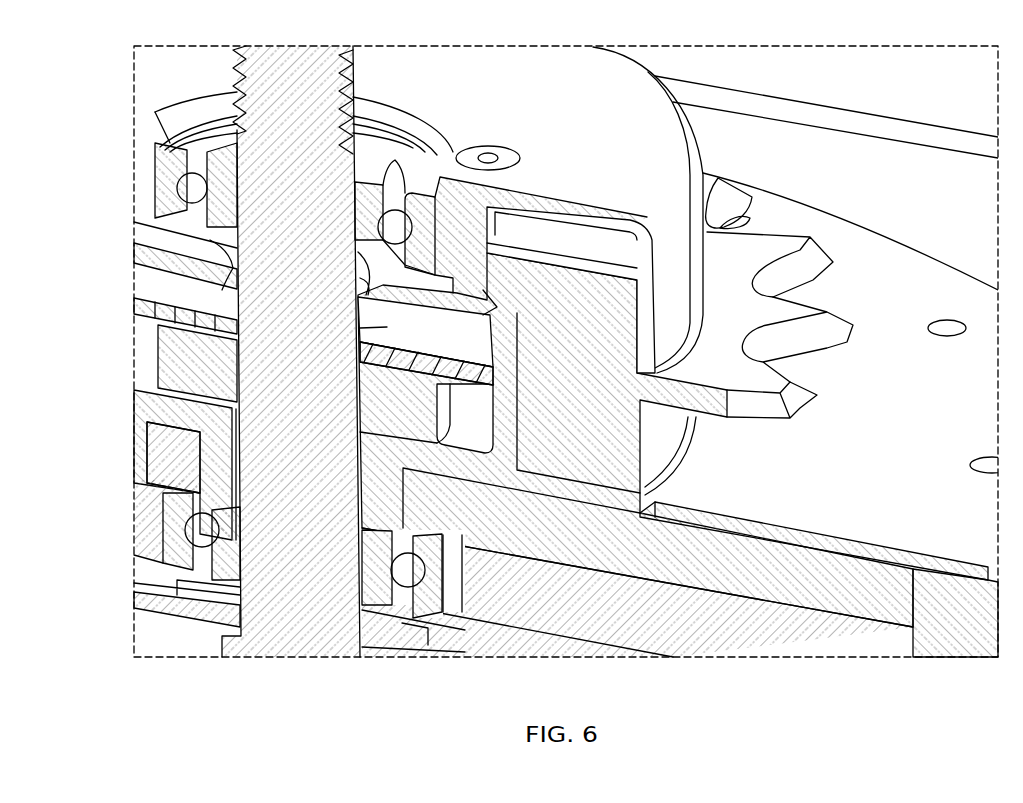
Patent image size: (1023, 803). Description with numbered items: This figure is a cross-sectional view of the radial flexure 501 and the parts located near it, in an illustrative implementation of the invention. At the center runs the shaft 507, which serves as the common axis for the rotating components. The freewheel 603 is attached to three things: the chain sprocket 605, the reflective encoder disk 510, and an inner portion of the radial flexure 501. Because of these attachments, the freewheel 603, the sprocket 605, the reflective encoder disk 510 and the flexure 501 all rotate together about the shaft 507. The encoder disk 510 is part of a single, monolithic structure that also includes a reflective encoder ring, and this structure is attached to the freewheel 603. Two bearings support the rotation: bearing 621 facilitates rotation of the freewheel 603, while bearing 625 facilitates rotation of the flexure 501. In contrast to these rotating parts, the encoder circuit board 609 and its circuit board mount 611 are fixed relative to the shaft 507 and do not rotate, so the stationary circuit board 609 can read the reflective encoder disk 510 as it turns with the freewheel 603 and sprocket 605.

The flexure 501 is at (157, 462).
The shaft 507 is at (317, 623).
The encoder disk 510 is at (165, 249).
The freewheel 603 is at (434, 70).
The chain sprocket 605 is at (821, 246).
The encoder circuit board 609 is at (385, 290).
The circuit board mount 611 is at (367, 377).
The bearing 621 is at (183, 185).
The bearing 625 is at (212, 540).